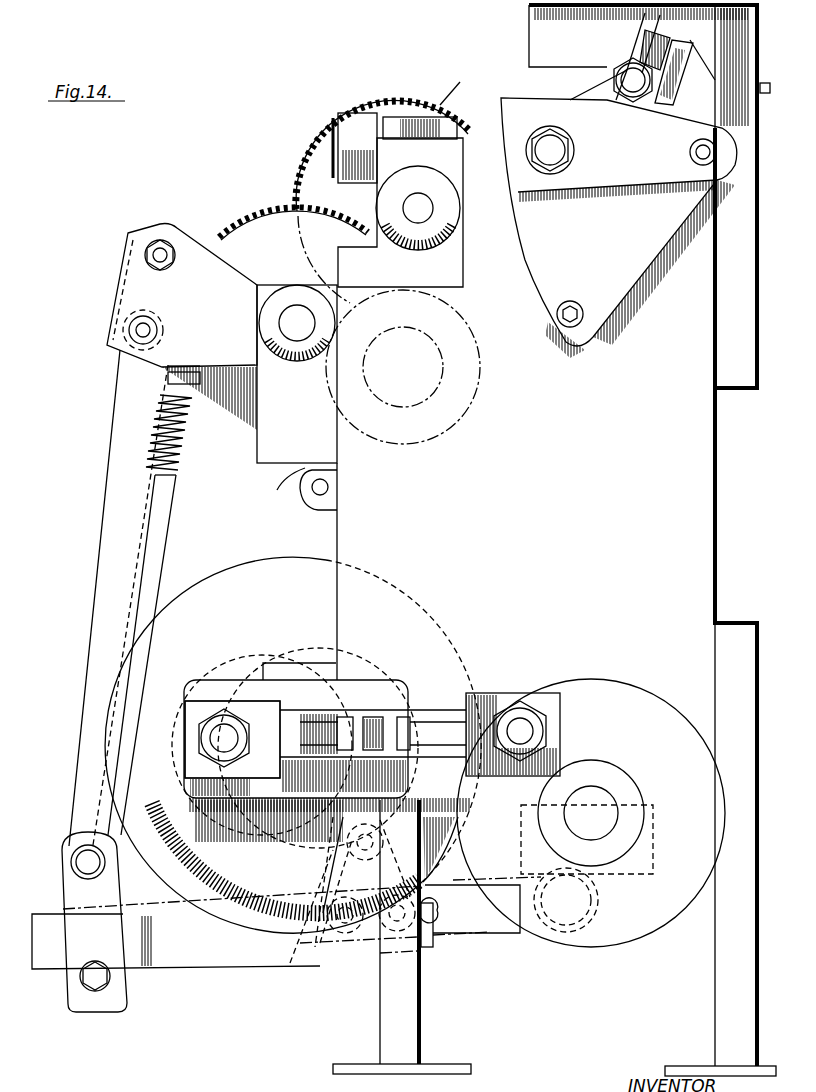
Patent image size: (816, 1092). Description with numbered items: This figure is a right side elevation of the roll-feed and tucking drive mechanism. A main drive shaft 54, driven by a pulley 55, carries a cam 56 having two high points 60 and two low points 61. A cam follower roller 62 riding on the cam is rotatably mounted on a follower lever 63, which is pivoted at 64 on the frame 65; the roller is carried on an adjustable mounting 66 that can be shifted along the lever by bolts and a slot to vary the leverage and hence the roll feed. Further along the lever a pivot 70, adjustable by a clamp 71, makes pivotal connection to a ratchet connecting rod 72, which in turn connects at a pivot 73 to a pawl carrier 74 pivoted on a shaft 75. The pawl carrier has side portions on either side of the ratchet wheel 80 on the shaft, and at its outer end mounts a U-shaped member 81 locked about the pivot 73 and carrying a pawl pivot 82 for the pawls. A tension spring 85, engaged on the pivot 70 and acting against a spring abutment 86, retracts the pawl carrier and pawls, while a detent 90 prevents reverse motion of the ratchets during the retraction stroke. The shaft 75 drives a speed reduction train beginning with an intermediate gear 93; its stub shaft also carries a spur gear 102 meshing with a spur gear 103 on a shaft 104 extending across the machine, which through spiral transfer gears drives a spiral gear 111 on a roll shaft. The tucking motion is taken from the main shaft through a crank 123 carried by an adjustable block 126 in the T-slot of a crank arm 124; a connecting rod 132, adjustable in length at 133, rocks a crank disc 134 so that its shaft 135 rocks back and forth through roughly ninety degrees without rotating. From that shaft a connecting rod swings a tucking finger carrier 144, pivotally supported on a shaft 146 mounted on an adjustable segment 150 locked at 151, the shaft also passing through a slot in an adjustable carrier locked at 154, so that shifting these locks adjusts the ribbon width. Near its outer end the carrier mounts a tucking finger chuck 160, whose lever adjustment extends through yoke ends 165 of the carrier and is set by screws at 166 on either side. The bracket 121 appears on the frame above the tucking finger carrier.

The main drive shaft 54 is at (333, 700).
The pulley 55 is at (232, 560).
The cam 56 is at (268, 652).
The high points 60 is at (222, 656).
The low points 61 is at (212, 826).
The cam follower roller 62 is at (345, 856).
The follower lever 63 is at (202, 945).
The pivot 64 is at (548, 934).
The frame 65 is at (632, 396).
The adjustable mounting 66 is at (288, 970).
The pivot 70 is at (74, 862).
The clamp 71 is at (112, 975).
The ratchet connecting rod 72 is at (118, 474).
The pivot 73 is at (128, 330).
The pawl carrier 74 is at (226, 310).
The shaft 75 is at (288, 324).
The ratchet wheel 80 is at (276, 216).
The U-shaped member 81 is at (125, 290).
The pawl pivot 82 is at (166, 246).
The tension spring 85 is at (183, 458).
The spring abutment 86 is at (190, 388).
The detent 90 is at (299, 489).
The intermediate gear 93 is at (480, 370).
The spur gear 102 is at (437, 390).
The spur gear 103 is at (318, 146).
The shaft 104 is at (428, 192).
The spiral gear 111 is at (470, 85).
The bracket 121 is at (528, 40).
The crank 123 is at (210, 738).
The crank arm 124 is at (410, 706).
The adjustable block 126 is at (186, 720).
The connecting rod 132 is at (434, 728).
The length adjustment 133 is at (372, 712).
The crank disc 134 is at (588, 672).
The shaft 135 is at (596, 808).
The tucking finger carrier 144 is at (602, 78).
The shaft 146 is at (562, 175).
The adjustable segment 150 is at (660, 164).
The lock 151 is at (698, 142).
The lock 154 is at (572, 302).
The tucking finger chuck 160 is at (628, 90).
The yoke ends 165 is at (693, 45).
The adjustment screws 166 is at (630, 30).